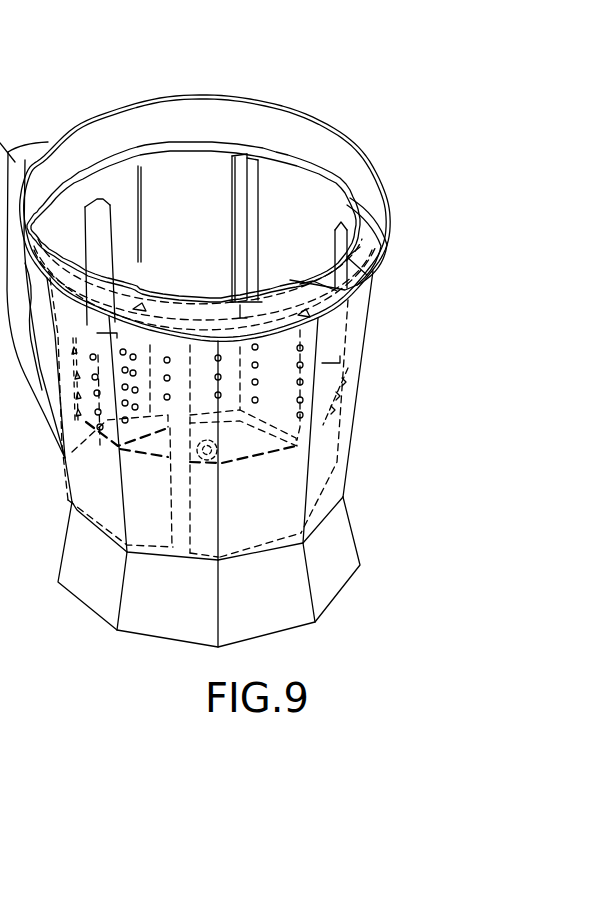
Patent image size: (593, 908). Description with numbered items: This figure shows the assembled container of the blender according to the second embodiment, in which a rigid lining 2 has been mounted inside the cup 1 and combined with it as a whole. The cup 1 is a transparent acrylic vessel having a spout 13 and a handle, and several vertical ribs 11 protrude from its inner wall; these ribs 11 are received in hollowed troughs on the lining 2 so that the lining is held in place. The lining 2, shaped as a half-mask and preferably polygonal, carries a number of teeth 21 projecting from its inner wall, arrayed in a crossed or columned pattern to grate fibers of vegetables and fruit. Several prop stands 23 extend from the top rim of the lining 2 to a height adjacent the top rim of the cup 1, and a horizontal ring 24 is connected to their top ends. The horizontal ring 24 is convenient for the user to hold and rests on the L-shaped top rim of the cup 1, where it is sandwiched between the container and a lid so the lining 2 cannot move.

The cup 1 is at (358, 373).
The lining 2 is at (328, 460).
The vertical rib 11 is at (96, 199).
The spout 13 is at (360, 284).
The teeth 21 is at (64, 457).
The prop stand 23 is at (248, 192).
The horizontal ring 24 is at (157, 146).